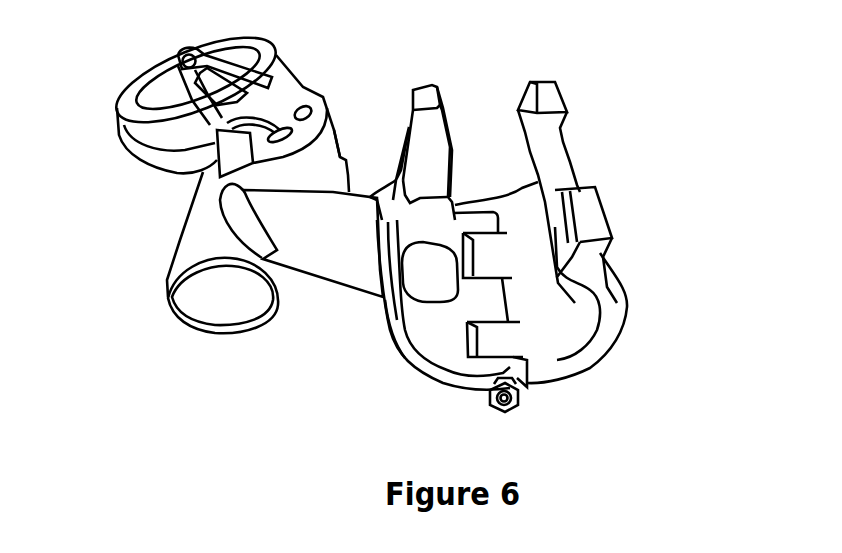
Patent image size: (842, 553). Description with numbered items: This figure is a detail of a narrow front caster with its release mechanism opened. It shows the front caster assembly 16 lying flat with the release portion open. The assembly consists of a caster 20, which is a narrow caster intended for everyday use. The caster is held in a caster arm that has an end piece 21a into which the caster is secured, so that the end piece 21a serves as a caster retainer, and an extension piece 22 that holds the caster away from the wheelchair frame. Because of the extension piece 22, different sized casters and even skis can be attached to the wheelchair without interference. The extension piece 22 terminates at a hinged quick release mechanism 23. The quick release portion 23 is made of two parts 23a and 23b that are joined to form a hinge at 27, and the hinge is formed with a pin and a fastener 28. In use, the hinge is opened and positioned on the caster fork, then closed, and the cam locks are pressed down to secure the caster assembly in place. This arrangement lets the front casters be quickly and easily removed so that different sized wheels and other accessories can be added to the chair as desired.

The caster 20 is at (122, 108).
The front caster assembly 16 is at (360, 150).
The extension piece 22 is at (307, 252).
The end piece 21a is at (210, 247).
The quick release mechanism 23 is at (566, 185).
The first part of quick release portion 23a is at (603, 255).
The second part of quick release portion 23b is at (405, 347).
The hinge 27 is at (477, 210).
The fastener 28 is at (515, 405).